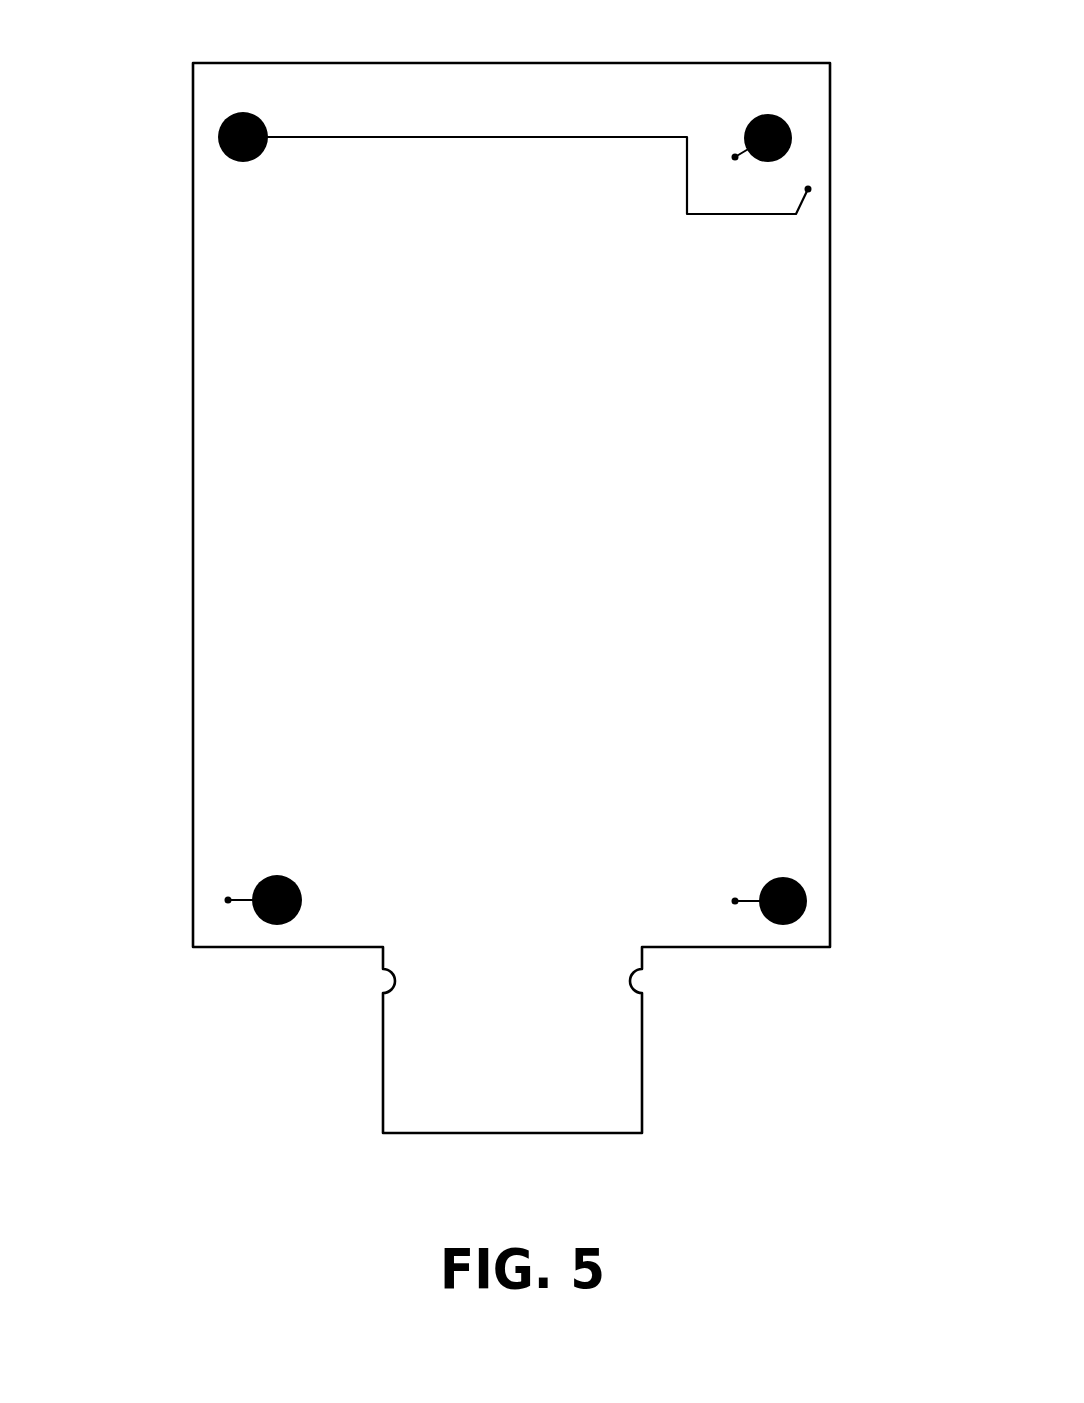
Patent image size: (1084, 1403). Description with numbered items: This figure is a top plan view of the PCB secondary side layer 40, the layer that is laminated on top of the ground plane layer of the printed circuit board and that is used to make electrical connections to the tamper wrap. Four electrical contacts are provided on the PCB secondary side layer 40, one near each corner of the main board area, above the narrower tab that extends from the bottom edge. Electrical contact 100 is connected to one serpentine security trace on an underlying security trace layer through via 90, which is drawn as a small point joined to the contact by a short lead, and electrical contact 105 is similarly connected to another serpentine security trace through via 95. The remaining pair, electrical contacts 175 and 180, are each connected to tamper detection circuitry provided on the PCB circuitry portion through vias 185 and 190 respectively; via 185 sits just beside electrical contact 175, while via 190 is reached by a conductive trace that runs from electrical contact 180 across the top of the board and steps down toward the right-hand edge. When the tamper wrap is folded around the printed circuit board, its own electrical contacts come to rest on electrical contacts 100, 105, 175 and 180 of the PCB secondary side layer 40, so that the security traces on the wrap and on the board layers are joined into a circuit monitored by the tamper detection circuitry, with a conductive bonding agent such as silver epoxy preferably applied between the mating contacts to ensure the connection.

The PCB secondary side layer 40 is at (830, 542).
The via 90 is at (720, 901).
The via 95 is at (735, 157).
The electrical contact 100 is at (787, 877).
The electrical contact 105 is at (780, 113).
The electrical contact 175 is at (283, 877).
The electrical contact 180 is at (249, 112).
The via 185 is at (217, 900).
The via 190 is at (818, 191).